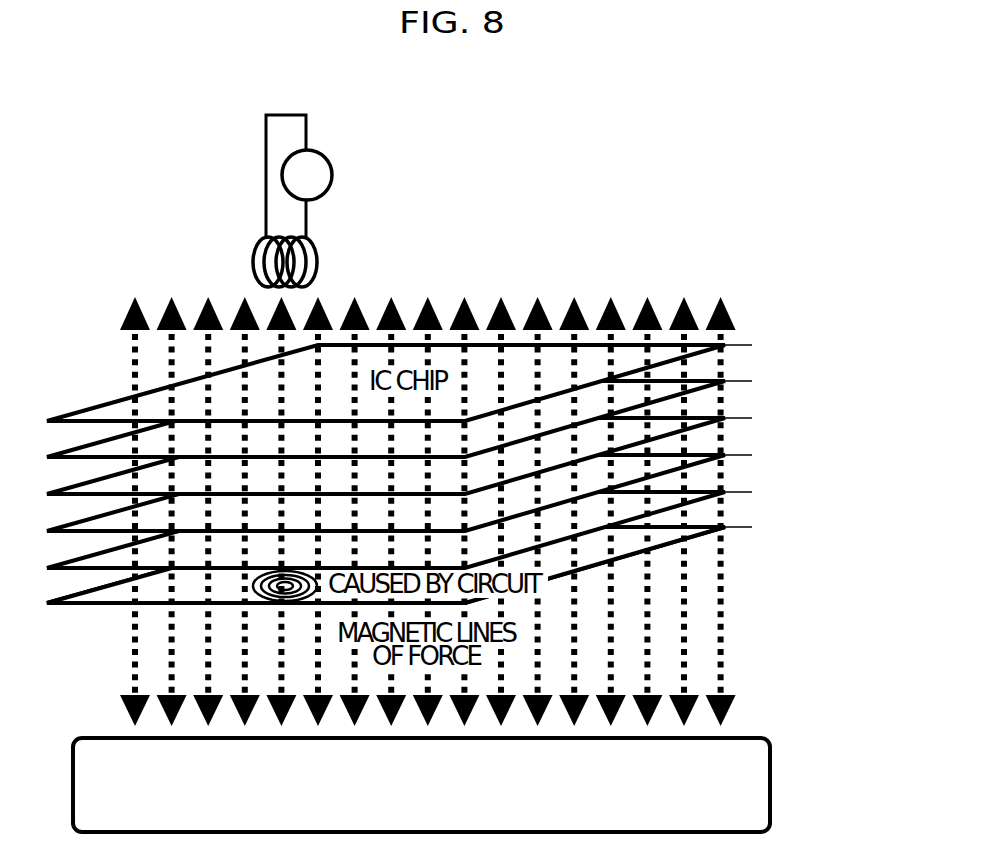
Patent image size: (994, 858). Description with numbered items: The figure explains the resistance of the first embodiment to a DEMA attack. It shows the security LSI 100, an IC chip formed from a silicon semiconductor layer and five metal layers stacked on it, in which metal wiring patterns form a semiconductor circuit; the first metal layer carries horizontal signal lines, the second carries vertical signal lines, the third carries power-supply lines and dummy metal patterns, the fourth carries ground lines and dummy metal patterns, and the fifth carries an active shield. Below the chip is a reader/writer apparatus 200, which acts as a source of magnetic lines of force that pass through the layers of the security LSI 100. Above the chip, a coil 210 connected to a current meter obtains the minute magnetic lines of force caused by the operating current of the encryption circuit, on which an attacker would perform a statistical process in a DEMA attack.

The security LSI 100 is at (770, 561).
The reader/writer apparatus 200 is at (770, 783).
The coil 210 is at (253, 262).